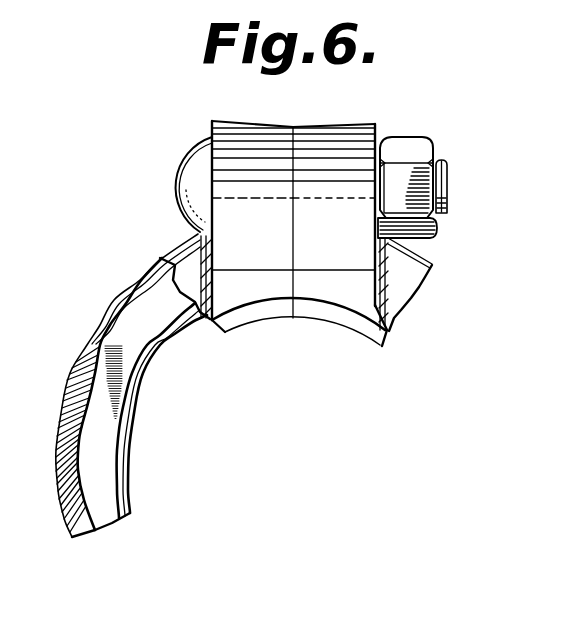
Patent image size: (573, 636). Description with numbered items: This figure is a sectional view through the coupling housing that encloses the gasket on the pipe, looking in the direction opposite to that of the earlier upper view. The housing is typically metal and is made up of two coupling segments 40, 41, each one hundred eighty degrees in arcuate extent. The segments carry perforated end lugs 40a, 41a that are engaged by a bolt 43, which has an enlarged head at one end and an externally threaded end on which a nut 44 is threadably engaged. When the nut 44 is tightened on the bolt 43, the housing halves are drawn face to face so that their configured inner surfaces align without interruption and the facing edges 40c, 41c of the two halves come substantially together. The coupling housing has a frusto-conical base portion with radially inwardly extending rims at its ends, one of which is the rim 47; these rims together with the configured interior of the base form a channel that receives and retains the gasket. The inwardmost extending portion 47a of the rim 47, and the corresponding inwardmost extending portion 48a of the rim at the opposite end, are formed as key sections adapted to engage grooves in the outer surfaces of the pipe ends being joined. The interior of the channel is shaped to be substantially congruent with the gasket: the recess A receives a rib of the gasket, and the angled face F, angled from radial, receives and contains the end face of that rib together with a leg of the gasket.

The coupling segment 40 is at (430, 243).
The end lug 40a is at (352, 127).
The facing edge 40c is at (292, 244).
The coupling segment 41 is at (118, 288).
The end lug 41a is at (255, 127).
The facing edge 41c is at (293, 209).
The bolt 43 is at (443, 160).
The nut 44 is at (389, 143).
The rim 47 is at (144, 343).
The inwardmost extending portion of rim 47a is at (130, 410).
The inwardmost extending portion of rim 48a is at (260, 322).
The recess A is at (85, 472).
The angled face F is at (103, 498).